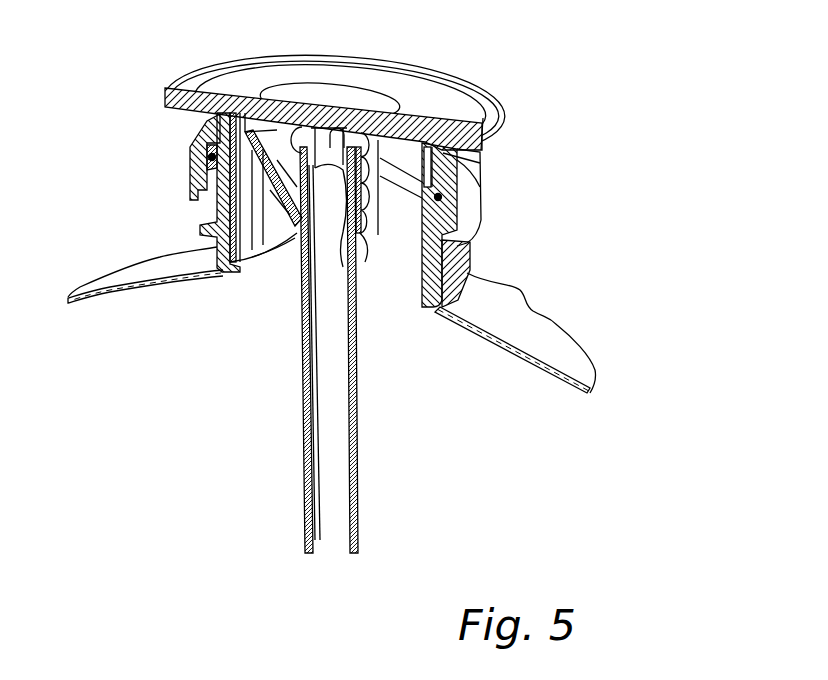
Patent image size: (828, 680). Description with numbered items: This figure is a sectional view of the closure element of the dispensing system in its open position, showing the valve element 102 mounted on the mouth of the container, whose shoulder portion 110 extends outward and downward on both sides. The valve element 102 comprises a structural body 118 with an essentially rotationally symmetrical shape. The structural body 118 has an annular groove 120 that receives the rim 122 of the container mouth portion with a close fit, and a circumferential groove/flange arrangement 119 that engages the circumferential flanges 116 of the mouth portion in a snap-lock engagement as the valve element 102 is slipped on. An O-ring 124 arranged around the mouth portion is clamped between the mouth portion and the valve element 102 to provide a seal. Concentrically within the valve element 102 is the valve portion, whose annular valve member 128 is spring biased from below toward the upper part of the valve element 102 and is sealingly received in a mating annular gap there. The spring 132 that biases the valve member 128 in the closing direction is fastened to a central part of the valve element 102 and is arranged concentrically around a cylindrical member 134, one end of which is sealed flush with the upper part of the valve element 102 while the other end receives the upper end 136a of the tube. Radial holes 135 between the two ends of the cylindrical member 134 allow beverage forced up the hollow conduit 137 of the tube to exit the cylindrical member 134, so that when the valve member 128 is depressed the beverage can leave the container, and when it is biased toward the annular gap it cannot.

The valve element 102 is at (509, 126).
The shoulder portion 110 is at (557, 347).
The circumferential flanges 116 is at (200, 227).
The structural body 118 is at (482, 190).
The circumferential groove/flange arrangement 119 is at (473, 272).
The annular groove 120 is at (207, 121).
The rim 122 is at (441, 196).
The O-ring 124 is at (209, 157).
The annular valve member 128 is at (388, 110).
The spring 132 is at (367, 248).
The cylindrical member 134 is at (343, 100).
The radial holes 135 is at (270, 164).
The upper end of the tube 136a is at (305, 232).
The hollow conduit 137 is at (352, 544).